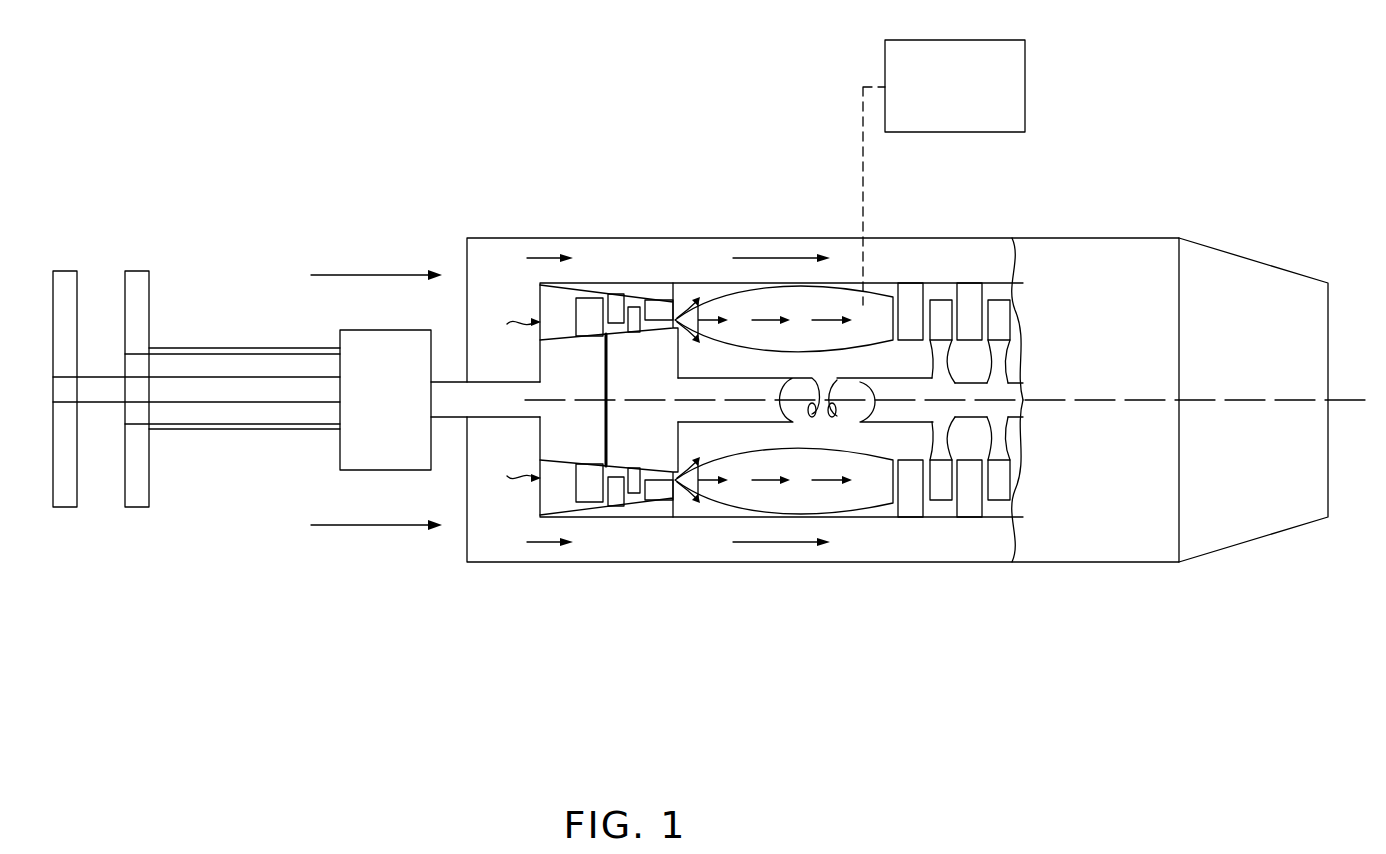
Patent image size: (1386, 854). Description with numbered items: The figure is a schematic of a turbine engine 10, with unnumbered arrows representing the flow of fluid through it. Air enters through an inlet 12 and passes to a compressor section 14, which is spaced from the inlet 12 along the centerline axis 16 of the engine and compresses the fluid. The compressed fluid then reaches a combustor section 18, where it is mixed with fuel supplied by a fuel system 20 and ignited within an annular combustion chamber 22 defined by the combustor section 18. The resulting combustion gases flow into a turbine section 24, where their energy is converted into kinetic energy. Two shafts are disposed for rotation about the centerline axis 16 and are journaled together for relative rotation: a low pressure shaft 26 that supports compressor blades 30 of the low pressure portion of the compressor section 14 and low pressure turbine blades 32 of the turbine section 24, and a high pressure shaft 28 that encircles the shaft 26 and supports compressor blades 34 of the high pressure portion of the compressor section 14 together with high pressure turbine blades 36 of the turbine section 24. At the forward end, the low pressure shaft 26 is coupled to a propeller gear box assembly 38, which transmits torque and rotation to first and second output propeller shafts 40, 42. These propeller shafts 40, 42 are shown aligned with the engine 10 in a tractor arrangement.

The turbine engine 10 is at (1215, 112).
The inlet 12 is at (462, 247).
The compressor section 14 is at (592, 403).
The centerline axis 16 is at (1365, 400).
The combustor section 18 is at (849, 533).
The fuel system 20 is at (942, 101).
The annular combustion chamber 22 is at (784, 400).
The turbine section 24 is at (966, 401).
The low pressure shaft 26 is at (553, 358).
The high pressure shaft 28 is at (727, 390).
The compressor blades 30 is at (585, 307).
The low pressure turbine blades 32 is at (998, 308).
The compressor blades 34 is at (637, 312).
The high pressure turbine blades 36 is at (942, 308).
The propeller gear box assembly 38 is at (373, 409).
The first output propeller shaft 40 is at (93, 387).
The second output propeller shaft 42 is at (168, 424).